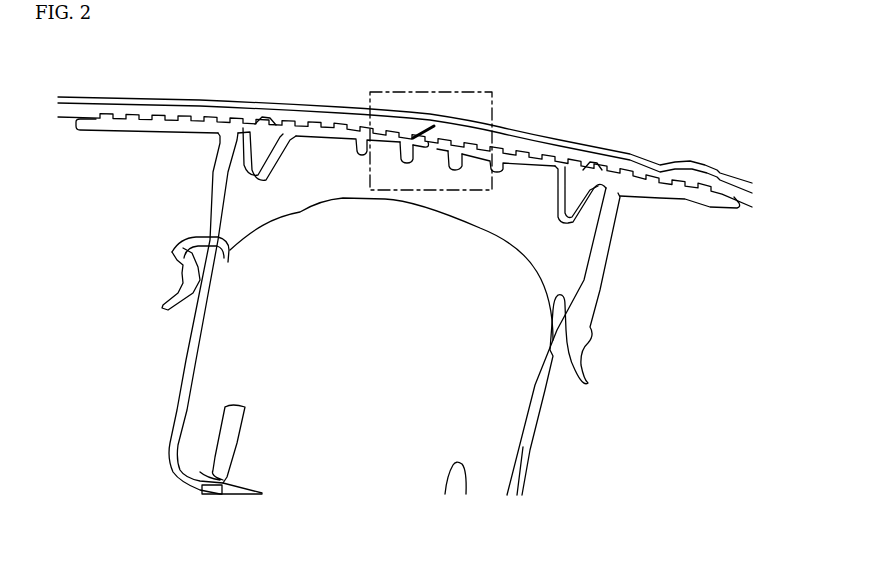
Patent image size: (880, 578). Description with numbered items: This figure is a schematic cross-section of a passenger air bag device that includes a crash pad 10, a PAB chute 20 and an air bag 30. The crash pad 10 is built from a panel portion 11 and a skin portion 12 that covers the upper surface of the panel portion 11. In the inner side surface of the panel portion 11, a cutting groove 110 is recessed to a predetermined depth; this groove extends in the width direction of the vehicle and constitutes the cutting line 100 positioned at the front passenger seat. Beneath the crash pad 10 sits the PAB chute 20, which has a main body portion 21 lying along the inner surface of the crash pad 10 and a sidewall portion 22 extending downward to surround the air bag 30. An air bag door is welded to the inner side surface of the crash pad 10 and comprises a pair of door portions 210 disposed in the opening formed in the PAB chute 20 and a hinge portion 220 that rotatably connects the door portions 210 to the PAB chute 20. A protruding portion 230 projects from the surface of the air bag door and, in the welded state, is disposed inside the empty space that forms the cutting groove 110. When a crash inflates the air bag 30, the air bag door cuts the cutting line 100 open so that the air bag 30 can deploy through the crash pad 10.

The crash pad 10 is at (405, 110).
The panel portion 11 is at (217, 112).
The skin portion 12 is at (91, 102).
The PAB chute 20 is at (162, 306).
The main body portion 21 is at (115, 127).
The sidewall portion 22 is at (198, 237).
The air bag 30 is at (228, 376).
The cutting line 100 is at (432, 129).
The cutting groove 110 is at (447, 134).
The door portions 210 is at (315, 128).
The hinge portion 220 is at (560, 222).
The protruding portion 230 is at (415, 136).